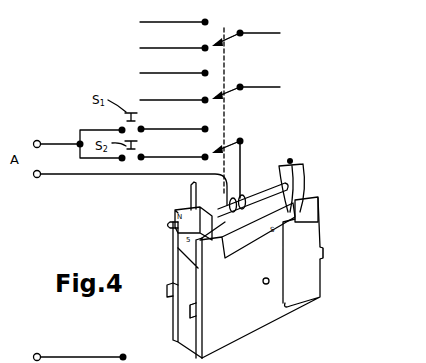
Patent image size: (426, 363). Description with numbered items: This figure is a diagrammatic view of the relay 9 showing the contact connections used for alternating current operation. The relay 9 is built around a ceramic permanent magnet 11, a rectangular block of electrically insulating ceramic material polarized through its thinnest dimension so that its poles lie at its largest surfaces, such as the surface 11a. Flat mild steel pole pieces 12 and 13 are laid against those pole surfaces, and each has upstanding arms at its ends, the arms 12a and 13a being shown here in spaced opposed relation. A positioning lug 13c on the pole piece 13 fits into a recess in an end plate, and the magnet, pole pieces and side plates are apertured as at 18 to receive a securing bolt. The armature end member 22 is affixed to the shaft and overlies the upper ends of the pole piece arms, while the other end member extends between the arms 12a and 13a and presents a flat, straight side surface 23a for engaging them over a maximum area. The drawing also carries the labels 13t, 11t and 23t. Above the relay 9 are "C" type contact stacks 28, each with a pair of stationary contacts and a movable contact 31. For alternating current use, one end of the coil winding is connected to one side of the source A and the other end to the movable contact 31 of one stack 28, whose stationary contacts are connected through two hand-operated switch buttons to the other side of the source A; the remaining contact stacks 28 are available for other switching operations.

The contact stack 28 is at (233, 80).
The movable contact 31 is at (231, 140).
The upstanding arm of pole piece 13 13a is at (268, 195).
The armature end member 22 is at (175, 212).
The pin on arm 13 13t is at (178, 240).
The pole piece 13 is at (173, 329).
The positioning lug of pole piece 13 13c is at (166, 299).
The ceramic permanent magnet 11 is at (188, 342).
The web of arm 11 11t is at (172, 262).
The pole surface of ceramic block 11a is at (202, 325).
The pole piece 12 is at (316, 295).
The upstanding arm of pole piece 12 12a is at (319, 207).
The relay 9 is at (321, 232).
The aperture 18 is at (268, 284).
The side surface of armature end member 23 23a is at (304, 168).
The contact tip 23t is at (291, 160).